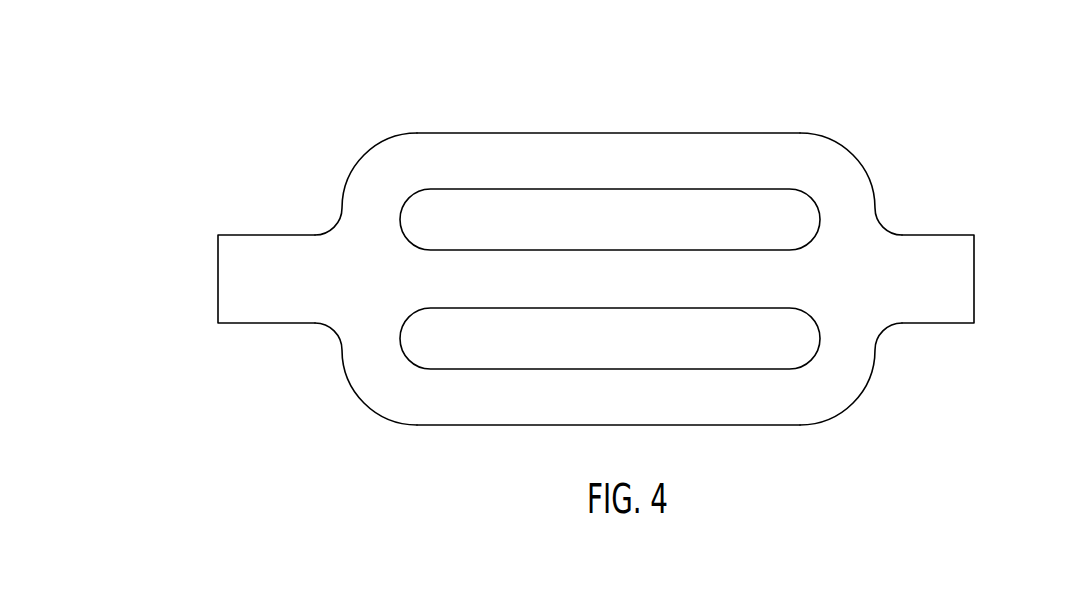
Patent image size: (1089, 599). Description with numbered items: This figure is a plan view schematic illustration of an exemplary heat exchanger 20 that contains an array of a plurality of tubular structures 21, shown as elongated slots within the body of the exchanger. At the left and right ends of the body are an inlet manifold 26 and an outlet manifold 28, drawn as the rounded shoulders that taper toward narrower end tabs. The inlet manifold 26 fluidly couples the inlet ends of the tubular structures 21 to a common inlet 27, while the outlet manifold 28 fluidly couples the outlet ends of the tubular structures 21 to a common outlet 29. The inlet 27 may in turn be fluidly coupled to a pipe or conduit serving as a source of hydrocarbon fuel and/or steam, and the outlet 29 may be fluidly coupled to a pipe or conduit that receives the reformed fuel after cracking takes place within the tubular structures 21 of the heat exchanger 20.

The heat exchanger 20 is at (648, 68).
The tubular structures 21 is at (471, 383).
The inlet manifold 26 is at (368, 193).
The inlet 27 is at (218, 280).
The outlet manifold 28 is at (847, 185).
The outlet 29 is at (974, 277).